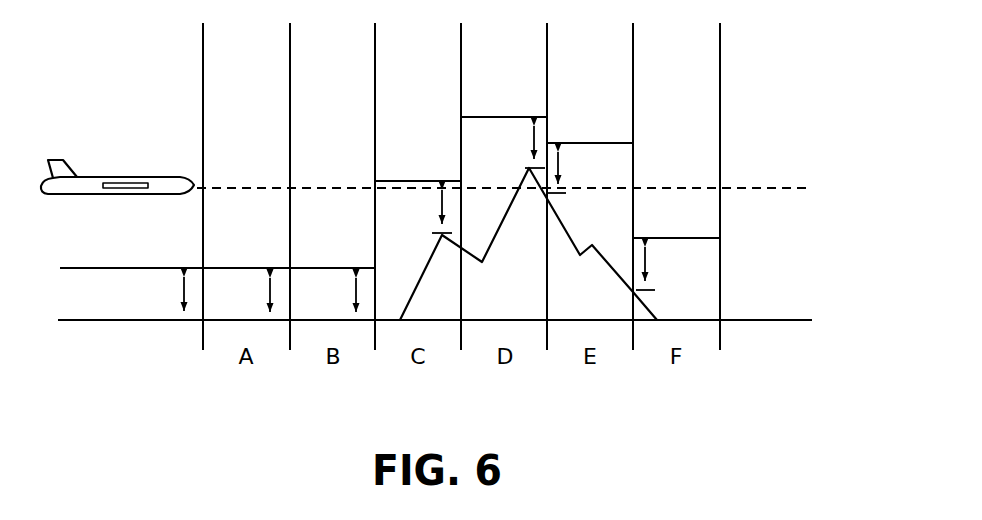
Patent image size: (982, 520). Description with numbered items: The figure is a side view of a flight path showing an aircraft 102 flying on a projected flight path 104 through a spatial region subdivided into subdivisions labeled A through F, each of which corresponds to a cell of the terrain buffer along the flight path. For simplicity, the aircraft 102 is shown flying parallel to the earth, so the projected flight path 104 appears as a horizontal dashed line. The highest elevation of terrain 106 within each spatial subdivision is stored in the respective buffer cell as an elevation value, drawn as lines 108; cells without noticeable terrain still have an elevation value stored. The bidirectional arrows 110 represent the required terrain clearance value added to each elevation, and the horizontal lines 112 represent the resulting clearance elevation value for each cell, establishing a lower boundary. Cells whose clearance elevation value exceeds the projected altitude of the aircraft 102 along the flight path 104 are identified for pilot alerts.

The aircraft 102 is at (118, 176).
The projected flight path 104 is at (777, 188).
The terrain 106 is at (421, 256).
The elevation value lines 108 is at (258, 318).
The bidirectional arrows 110 is at (182, 300).
The horizontal lines 112 is at (145, 268).